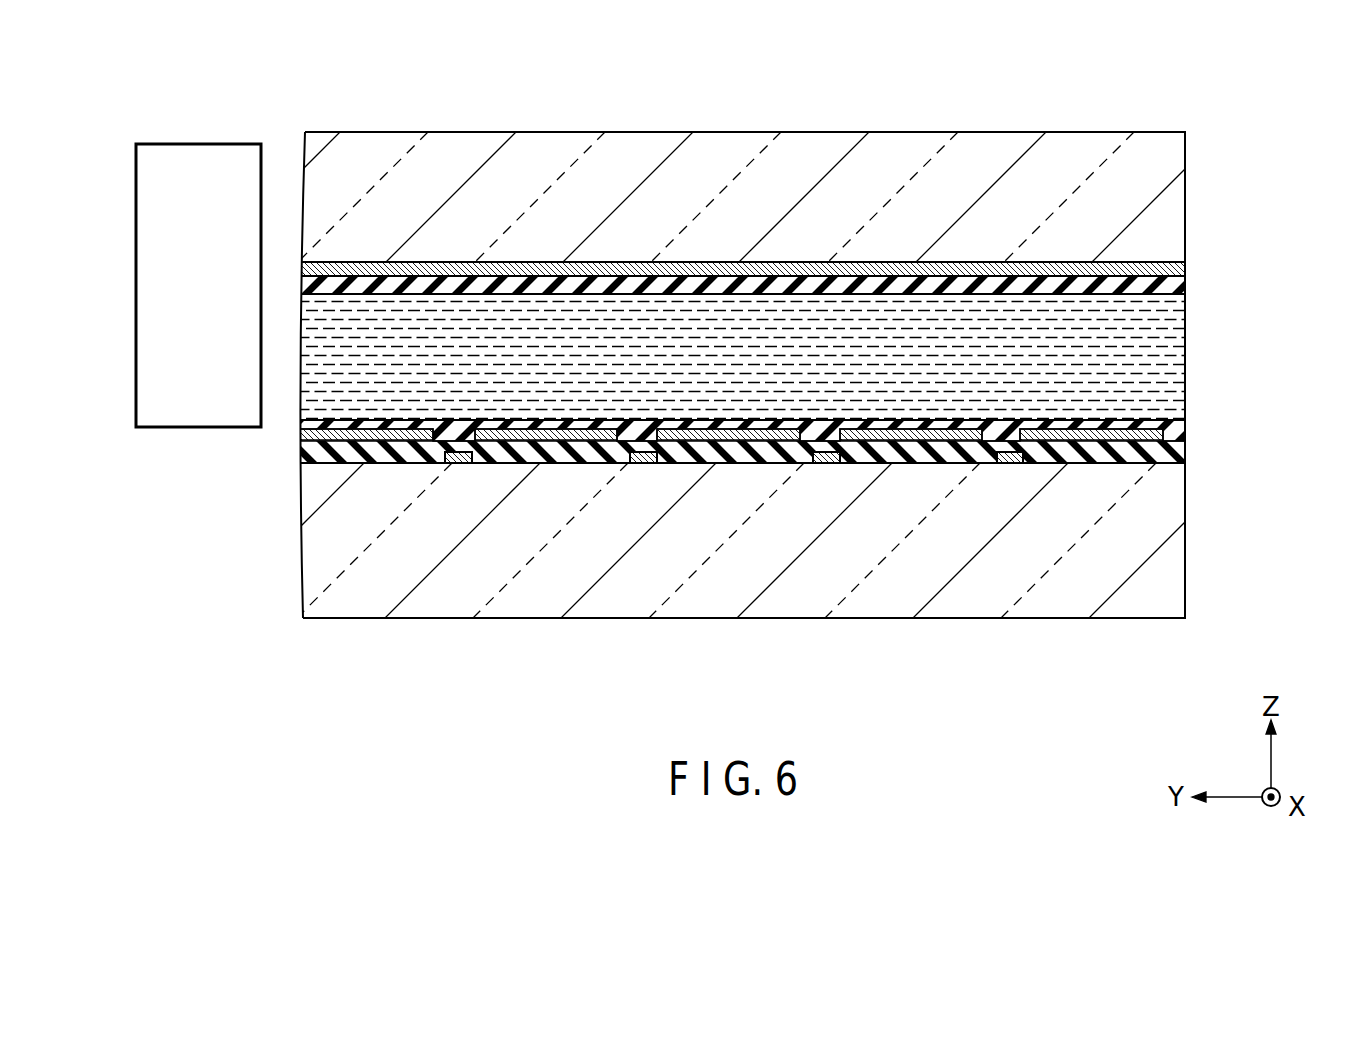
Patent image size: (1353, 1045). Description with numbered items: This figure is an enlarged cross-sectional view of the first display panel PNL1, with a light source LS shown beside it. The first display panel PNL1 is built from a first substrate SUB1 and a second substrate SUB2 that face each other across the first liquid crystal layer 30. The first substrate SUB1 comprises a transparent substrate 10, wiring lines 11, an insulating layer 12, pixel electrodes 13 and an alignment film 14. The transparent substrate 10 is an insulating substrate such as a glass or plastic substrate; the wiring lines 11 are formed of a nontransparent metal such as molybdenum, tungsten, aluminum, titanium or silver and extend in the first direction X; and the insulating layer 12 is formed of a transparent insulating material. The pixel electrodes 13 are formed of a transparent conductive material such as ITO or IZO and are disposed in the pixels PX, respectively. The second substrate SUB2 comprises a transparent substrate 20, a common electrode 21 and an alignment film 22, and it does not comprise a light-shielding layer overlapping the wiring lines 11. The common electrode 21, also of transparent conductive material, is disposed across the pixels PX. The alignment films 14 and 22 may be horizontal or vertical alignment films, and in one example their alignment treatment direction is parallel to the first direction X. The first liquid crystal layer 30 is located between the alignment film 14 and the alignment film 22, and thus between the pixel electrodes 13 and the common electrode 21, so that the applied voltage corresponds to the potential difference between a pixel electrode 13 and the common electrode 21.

The first display panel PNL1 is at (1157, 130).
The first substrate SUB1 is at (753, 544).
The second substrate SUB2 is at (753, 191).
The light source LS is at (157, 428).
The transparent substrate 10 is at (688, 605).
The wiring lines 11 is at (457, 455).
The insulating layer 12 is at (877, 450).
The pixel electrodes 13 is at (340, 438).
The alignment film 14 is at (993, 432).
The transparent substrate 20 is at (815, 142).
The common electrode 21 is at (943, 268).
The alignment film 22 is at (1053, 290).
The first liquid crystal layer 30 is at (1168, 376).
The pixels PX is at (557, 452).